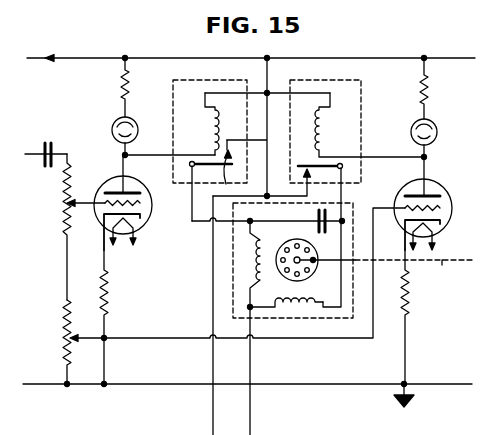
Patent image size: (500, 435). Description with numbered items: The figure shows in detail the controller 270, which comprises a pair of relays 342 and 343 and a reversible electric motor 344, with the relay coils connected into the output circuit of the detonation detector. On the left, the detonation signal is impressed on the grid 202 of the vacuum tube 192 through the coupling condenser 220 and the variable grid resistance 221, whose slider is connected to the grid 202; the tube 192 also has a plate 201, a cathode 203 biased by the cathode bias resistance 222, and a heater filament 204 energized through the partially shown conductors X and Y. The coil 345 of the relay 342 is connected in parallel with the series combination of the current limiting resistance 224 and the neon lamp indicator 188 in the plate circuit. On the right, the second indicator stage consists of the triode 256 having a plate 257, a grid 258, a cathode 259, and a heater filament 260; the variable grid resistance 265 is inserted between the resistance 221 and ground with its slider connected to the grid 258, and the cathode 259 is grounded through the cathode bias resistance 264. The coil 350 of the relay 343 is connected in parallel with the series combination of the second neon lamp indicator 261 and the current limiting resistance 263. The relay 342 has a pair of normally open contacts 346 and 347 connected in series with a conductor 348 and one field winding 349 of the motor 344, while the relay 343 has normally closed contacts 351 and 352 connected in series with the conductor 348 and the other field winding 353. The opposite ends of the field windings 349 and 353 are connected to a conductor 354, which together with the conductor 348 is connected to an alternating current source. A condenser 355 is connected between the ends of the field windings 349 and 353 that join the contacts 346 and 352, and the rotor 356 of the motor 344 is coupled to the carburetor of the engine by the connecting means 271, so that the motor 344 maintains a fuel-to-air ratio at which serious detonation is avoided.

The neon lamp indicator 188 is at (113, 122).
The vacuum tube 192 is at (108, 182).
The plate 201 is at (118, 167).
The grid 202 is at (140, 200).
The cathode 203 is at (142, 214).
The heater filament 204 is at (137, 231).
The coupling condenser 220 is at (47, 142).
The variable grid resistance 221 is at (63, 194).
The cathode bias resistance 222 is at (106, 286).
The current limiting resistance 224 is at (120, 86).
The triode 256 is at (438, 184).
The plate 257 is at (432, 171).
The grid 258 is at (441, 207).
The cathode 259 is at (442, 220).
The heater filament 260 is at (440, 229).
The second neon lamp indicator 261 is at (434, 124).
The current limiting resistance 263 is at (429, 94).
The cathode bias resistance 264 is at (410, 306).
The variable grid resistance 265 is at (63, 328).
The controller 270 is at (188, 285).
The connecting means 271 is at (442, 269).
The relay 342 is at (169, 90).
The relay 343 is at (370, 88).
The reversible electric motor 344 is at (361, 201).
The coil 345 is at (213, 136).
The normally open contact 346 is at (211, 192).
The normally open contact 347 is at (241, 168).
The conductor 348 is at (211, 357).
The field winding 349 is at (267, 246).
The coil 350 is at (325, 132).
The normally closed contact 351 is at (299, 165).
The normally closed contact 352 is at (276, 184).
The field winding 353 is at (286, 309).
The conductor 354 is at (252, 358).
The condenser 355 is at (318, 213).
The rotor 356 is at (305, 275).